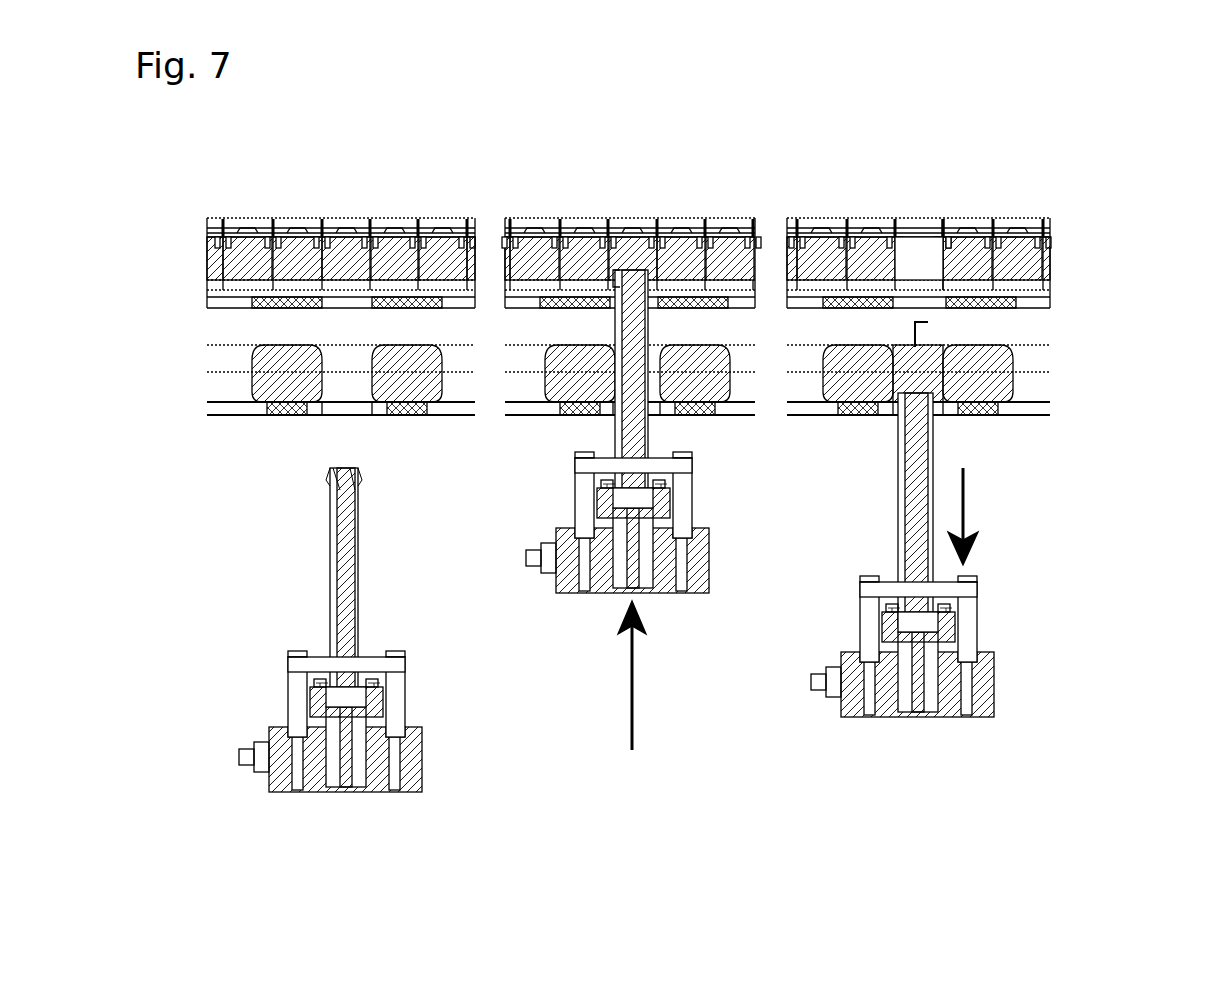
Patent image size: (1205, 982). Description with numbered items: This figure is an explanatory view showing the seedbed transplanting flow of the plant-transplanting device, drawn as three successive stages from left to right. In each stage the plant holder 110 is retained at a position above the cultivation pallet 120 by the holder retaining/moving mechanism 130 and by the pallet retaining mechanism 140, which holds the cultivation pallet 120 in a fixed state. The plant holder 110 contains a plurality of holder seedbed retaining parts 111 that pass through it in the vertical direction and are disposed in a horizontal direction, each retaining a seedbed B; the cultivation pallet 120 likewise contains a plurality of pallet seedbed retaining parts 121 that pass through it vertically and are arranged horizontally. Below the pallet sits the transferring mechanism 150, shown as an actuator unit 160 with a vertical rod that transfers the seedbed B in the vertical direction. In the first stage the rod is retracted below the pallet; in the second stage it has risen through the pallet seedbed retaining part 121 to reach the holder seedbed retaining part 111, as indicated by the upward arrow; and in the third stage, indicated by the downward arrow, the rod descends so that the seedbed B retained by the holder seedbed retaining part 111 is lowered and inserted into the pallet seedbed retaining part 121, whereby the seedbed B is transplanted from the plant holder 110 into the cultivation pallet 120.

The plant holder 110 is at (1043, 228).
The holder seedbed retaining part 111 is at (458, 232).
The seedbed B is at (263, 232).
The cultivation pallet 120 is at (262, 385).
The pallet seedbed retaining part 121 is at (345, 397).
The holder retaining/moving mechanism 130 is at (263, 310).
The pallet retaining mechanism 140 is at (990, 417).
The transferring mechanism 150 is at (426, 704).
The actuator 160 is at (698, 622).